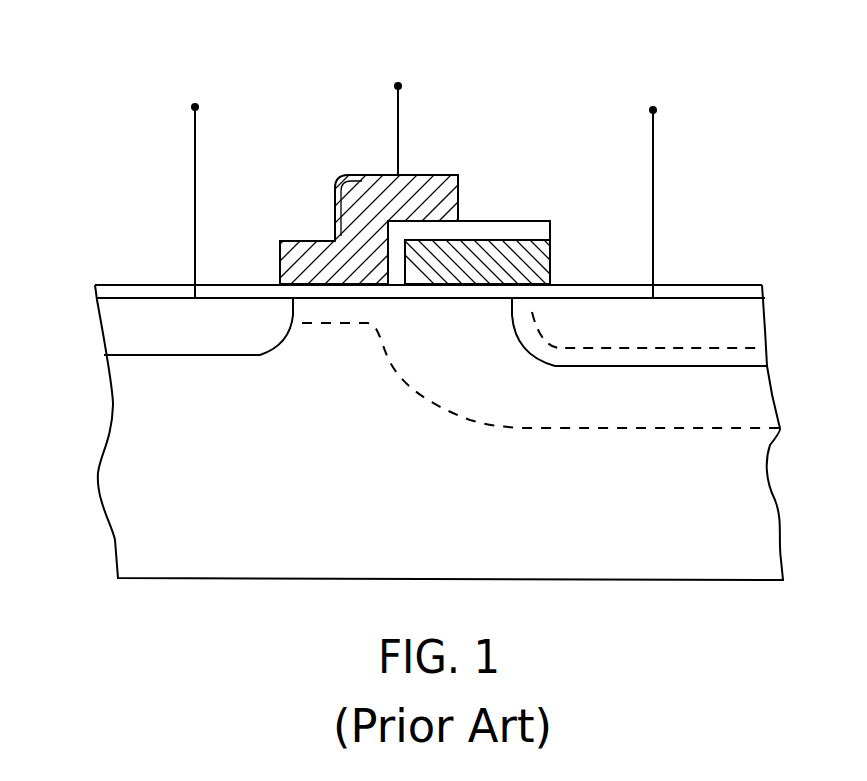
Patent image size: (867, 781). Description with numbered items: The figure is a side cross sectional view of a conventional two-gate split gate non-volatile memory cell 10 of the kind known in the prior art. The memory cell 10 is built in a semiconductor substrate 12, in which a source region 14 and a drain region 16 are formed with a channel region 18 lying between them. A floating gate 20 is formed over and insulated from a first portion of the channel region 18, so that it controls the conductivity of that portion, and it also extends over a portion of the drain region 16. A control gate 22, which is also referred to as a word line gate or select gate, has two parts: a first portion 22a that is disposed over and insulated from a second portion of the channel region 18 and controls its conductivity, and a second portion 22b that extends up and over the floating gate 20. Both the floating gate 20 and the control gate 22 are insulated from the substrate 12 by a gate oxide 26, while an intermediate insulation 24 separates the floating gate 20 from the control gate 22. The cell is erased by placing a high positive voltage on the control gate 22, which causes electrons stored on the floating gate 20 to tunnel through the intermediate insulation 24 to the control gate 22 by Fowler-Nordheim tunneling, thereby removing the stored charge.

The memory cell 10 is at (103, 100).
The semiconductor substrate 12 is at (192, 540).
The source region 14 is at (201, 340).
The drain region 16 is at (686, 340).
The channel region 18 is at (430, 338).
The floating gate 20 is at (540, 258).
The control gate 22 is at (336, 188).
The first portion of the control gate 22a is at (340, 240).
The second portion of the control gate 22b is at (362, 185).
The intermediate insulation 24 is at (425, 230).
The gate oxide 26 is at (597, 291).